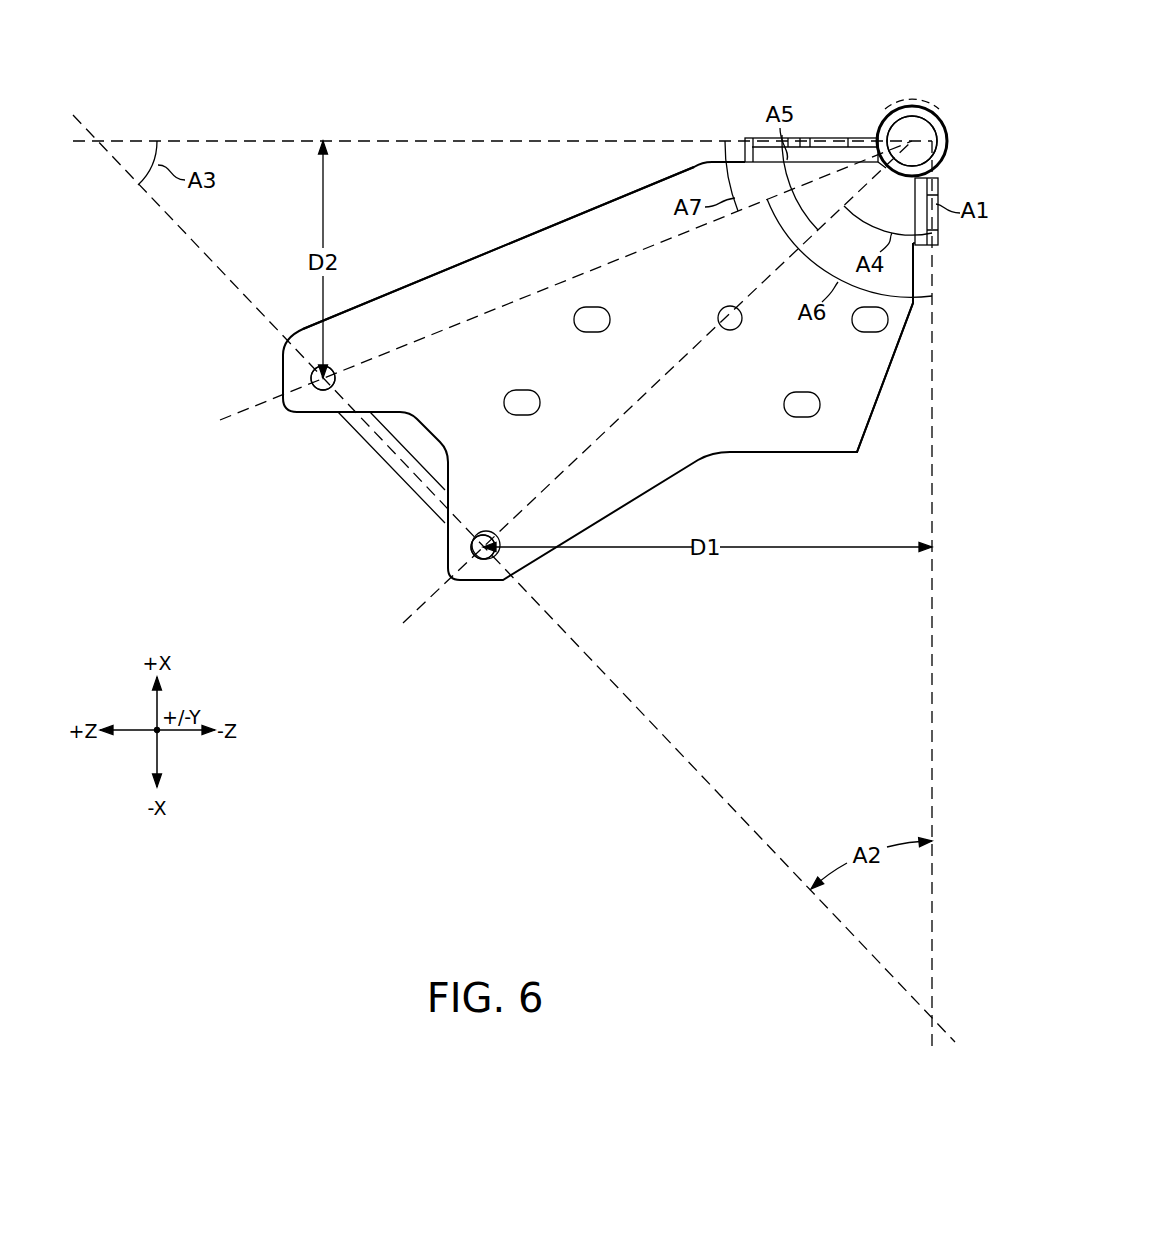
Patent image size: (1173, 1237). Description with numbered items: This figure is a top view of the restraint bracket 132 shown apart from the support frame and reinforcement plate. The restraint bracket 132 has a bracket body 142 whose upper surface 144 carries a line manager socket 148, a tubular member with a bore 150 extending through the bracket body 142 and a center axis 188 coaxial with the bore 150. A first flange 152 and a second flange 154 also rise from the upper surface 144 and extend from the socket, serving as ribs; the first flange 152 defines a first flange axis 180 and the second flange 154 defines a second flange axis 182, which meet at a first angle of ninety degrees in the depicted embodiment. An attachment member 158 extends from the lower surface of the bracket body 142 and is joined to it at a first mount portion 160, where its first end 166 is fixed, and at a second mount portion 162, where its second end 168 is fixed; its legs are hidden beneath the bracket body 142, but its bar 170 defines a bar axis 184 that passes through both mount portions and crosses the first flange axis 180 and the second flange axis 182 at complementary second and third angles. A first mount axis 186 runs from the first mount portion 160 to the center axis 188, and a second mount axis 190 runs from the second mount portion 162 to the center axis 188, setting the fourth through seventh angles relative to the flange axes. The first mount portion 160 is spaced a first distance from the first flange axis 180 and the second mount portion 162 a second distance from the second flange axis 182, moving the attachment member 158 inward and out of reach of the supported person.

The restraint bracket 132 is at (553, 117).
The bracket body 142 is at (432, 255).
The upper surface 144 is at (841, 447).
The line manager socket 148 is at (904, 104).
The bore 150 is at (916, 136).
The first flange 152 is at (940, 242).
The second flange 154 is at (750, 138).
The attachment member 158 is at (386, 519).
The first mount portion 160 is at (480, 534).
The second mount portion 162 is at (336, 380).
The first end 166 is at (488, 562).
The second end 168 is at (312, 374).
The bar 170 is at (392, 470).
The first flange axis 180 is at (933, 488).
The second flange axis 182 is at (480, 141).
The bar axis 184 is at (718, 797).
The first mount axis 186 is at (640, 407).
The center axis 188 is at (892, 125).
The second mount axis 190 is at (480, 327).